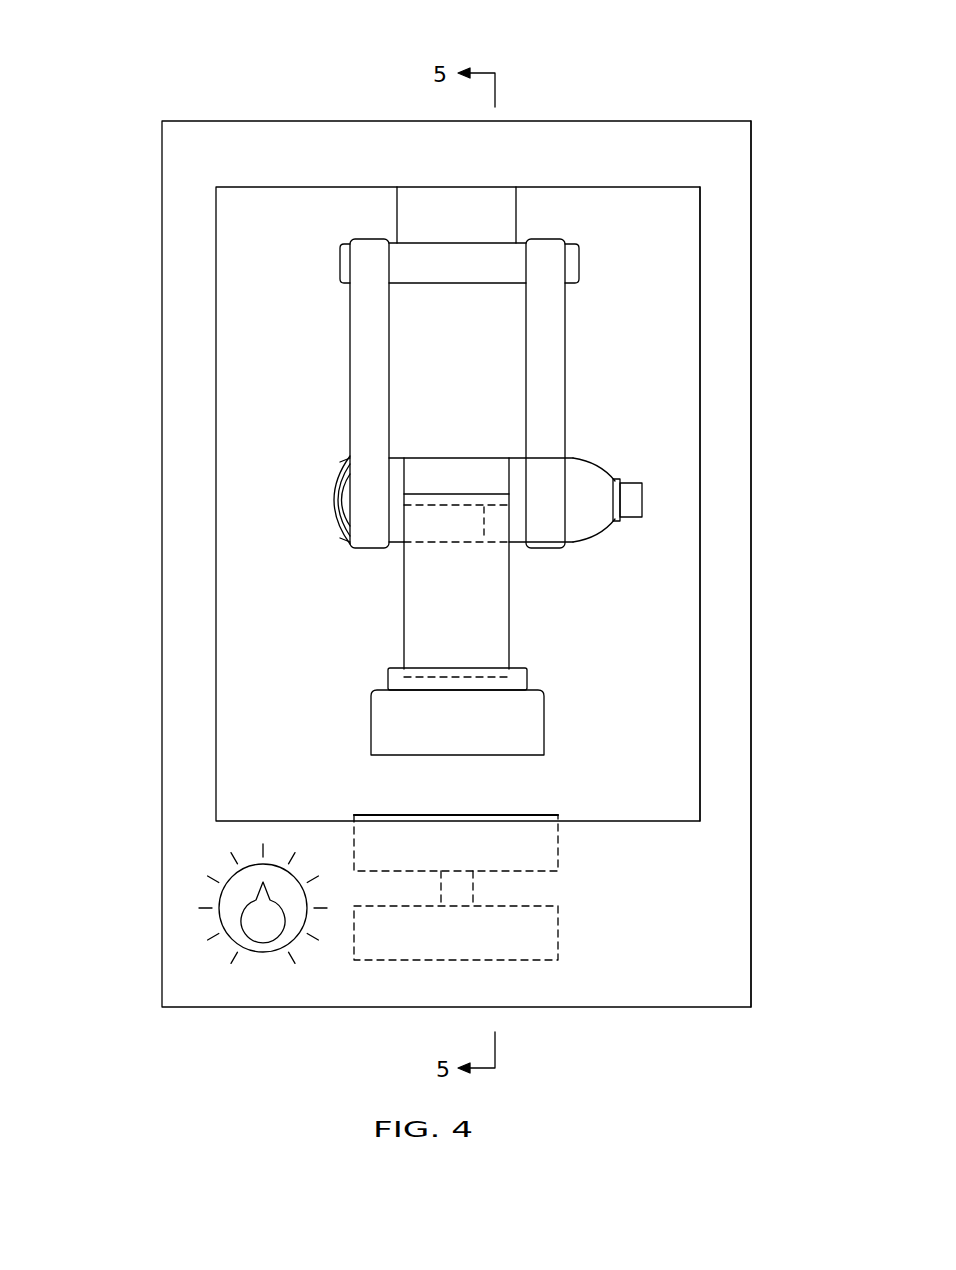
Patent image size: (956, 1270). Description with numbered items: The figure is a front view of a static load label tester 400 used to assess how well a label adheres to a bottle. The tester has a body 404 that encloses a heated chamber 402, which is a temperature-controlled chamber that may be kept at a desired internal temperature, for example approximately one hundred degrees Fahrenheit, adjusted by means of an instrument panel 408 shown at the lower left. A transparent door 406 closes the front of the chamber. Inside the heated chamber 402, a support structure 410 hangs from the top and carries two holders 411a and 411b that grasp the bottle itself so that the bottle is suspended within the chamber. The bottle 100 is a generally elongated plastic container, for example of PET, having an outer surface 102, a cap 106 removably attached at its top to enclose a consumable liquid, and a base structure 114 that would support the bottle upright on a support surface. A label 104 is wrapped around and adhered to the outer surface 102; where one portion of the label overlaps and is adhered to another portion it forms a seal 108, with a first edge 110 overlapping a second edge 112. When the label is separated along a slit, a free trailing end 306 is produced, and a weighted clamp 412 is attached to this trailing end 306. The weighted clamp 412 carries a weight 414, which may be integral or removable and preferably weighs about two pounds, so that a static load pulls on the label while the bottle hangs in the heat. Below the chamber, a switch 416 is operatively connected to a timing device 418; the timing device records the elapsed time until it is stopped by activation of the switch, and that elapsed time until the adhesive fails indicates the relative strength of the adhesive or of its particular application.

The static load label tester 400 is at (110, 94).
The heated chamber 402 is at (227, 243).
The body 404 is at (728, 293).
The transparent door 406 is at (702, 595).
The instrument panel 408 is at (263, 917).
The support structure 410 is at (442, 258).
The holder 411a is at (366, 339).
The holder 411b is at (563, 327).
The weighted clamp 412 is at (395, 679).
The weight 414 is at (387, 721).
The switch 416 is at (413, 845).
The timing device 418 is at (535, 930).
The bottle 100 is at (445, 527).
The outer surface 102 is at (582, 518).
The label 104 is at (427, 638).
The cap 106 is at (613, 478).
The seal 108 is at (448, 497).
The first edge 110 is at (472, 492).
The second edge 112 is at (484, 505).
The base structure 114 is at (340, 504).
The trailing end 306 is at (440, 677).